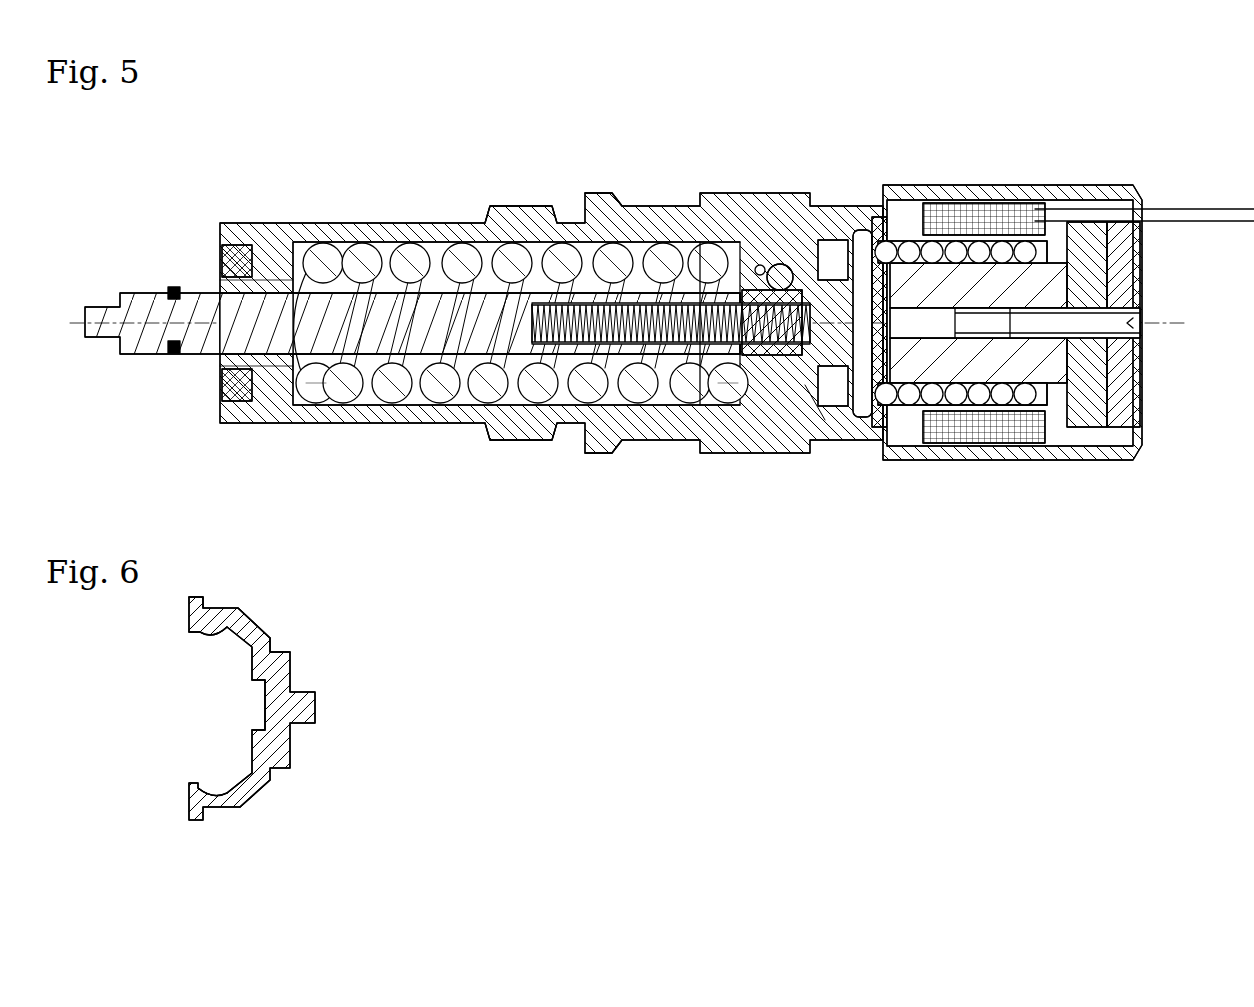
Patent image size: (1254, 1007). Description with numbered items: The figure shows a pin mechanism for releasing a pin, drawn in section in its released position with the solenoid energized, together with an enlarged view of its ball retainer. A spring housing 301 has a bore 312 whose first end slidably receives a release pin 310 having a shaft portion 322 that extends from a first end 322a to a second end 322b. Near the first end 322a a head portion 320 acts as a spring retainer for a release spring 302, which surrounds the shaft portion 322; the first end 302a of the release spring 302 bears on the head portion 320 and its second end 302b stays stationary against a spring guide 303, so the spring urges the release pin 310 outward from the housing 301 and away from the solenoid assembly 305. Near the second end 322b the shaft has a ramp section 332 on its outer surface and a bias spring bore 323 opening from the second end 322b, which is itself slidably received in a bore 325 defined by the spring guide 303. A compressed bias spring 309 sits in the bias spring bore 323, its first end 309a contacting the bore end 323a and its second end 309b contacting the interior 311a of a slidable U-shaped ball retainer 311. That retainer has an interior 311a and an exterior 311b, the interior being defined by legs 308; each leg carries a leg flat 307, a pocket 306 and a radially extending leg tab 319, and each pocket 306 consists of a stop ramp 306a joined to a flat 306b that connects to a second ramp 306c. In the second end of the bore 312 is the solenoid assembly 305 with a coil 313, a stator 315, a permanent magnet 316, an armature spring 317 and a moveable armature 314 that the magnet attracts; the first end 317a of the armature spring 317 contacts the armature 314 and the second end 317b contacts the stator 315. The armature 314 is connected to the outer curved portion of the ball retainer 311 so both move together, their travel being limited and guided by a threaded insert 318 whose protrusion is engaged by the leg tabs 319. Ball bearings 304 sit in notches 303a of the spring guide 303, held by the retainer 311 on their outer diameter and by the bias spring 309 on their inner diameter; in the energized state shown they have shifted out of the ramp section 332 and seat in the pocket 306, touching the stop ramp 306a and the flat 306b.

In FIG. 5, the spring housing 301 is at (242, 223).
In FIG. 5, the release spring 302 is at (345, 232).
In FIG. 5, the first end of release spring 302a is at (315, 385).
In FIG. 5, the second end of release spring 302b is at (724, 400).
In FIG. 5, the spring guide 303 is at (735, 355).
In FIG. 5, the notch of spring guide 303a is at (795, 355).
In FIG. 5, the ball bearing 304 is at (785, 266).
In FIG. 5, the solenoid assembly 305 is at (975, 465).
In FIG. 6, the pocket 306 is at (227, 780).
In FIG. 6, the stop ramp 306a is at (215, 778).
In FIG. 6, the flat 306b is at (225, 628).
In FIG. 6, the second ramp 306c is at (247, 777).
In FIG. 6, the leg flat 307 is at (196, 648).
In FIG. 6, the legs 308 is at (238, 608).
In FIG. 5, the bias spring 309 is at (648, 345).
In FIG. 5, the first end of bias spring 309a is at (530, 340).
In FIG. 5, the second end of bias spring 309b is at (808, 290).
In FIG. 5, the release pin 310 is at (128, 355).
In FIG. 5, the slidable U-shaped ball retainer 311 is at (862, 300).
In FIG. 6, the interior of ball retainer 311a is at (224, 709).
In FIG. 6, the exterior of ball retainer 311b is at (267, 630).
In FIG. 5, the bore 312 is at (378, 228).
In FIG. 5, the coil 313 is at (970, 213).
In FIG. 5, the moveable armature 314 is at (880, 240).
In FIG. 5, the stator 315 is at (1045, 360).
In FIG. 5, the permanent magnet 316 is at (1090, 240).
In FIG. 5, the armature spring 317 is at (990, 245).
In FIG. 5, the first end of armature spring 317a is at (905, 405).
In FIG. 5, the second end of armature spring 317b is at (1047, 248).
In FIG. 5, the threaded insert 318 is at (808, 400).
In FIG. 6, the leg tab 319 is at (200, 595).
In FIG. 5, the head portion 320 is at (290, 395).
In FIG. 5, the shaft portion 322 is at (375, 395).
In FIG. 5, the first end of shaft portion 322a is at (88, 342).
In FIG. 5, the second end of shaft portion 322b is at (717, 350).
In FIG. 5, the bias spring bore 323 is at (515, 232).
In FIG. 5, the end of bias spring bore 323a is at (463, 230).
In FIG. 5, the bore of spring guide 325 is at (760, 266).
In FIG. 5, the ramp section 332 is at (695, 300).